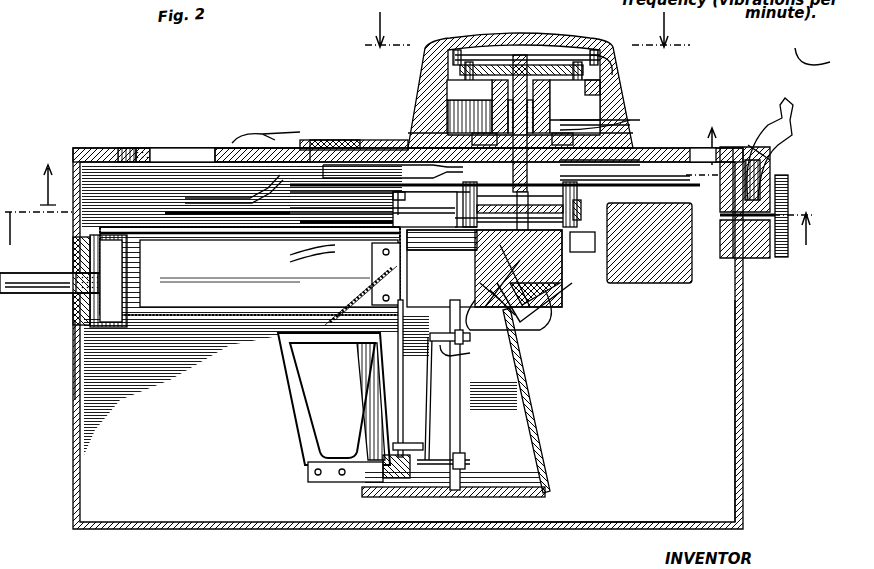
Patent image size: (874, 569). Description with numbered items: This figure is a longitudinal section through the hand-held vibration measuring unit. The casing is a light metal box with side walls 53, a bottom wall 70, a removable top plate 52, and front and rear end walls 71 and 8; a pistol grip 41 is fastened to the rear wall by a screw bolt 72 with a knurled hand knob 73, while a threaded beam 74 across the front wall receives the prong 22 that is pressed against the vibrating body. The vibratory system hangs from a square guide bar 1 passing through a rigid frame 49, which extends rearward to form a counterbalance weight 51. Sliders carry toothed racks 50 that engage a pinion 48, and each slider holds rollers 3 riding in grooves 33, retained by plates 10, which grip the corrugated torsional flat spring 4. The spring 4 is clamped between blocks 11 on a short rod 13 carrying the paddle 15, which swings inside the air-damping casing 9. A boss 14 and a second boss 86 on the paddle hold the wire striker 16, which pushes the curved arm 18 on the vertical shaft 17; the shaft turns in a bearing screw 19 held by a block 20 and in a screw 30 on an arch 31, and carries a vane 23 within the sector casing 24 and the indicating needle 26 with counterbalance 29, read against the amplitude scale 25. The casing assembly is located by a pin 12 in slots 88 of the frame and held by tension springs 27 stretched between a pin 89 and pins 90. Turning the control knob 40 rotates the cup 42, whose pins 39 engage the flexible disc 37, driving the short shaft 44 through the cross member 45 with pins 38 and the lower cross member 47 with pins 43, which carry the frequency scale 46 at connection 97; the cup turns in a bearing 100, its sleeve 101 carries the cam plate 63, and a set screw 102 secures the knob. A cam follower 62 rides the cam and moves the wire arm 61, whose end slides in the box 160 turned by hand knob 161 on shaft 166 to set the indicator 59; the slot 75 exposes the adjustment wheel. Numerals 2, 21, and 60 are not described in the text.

The bar 1 is at (540, 310).
The wedge face 2 is at (555, 300).
The rollers 3 is at (413, 228).
The flat spring 4 is at (363, 166).
The rear end wall 8 is at (740, 377).
The casing 9 is at (525, 382).
The plates 10 is at (520, 80).
The blocks 11 is at (460, 300).
The pin 12 is at (346, 340).
The short rod 13 is at (463, 335).
The boss 14 is at (465, 351).
The paddle 15 is at (460, 370).
The striker 16 is at (432, 416).
The vertical shaft 17 is at (403, 368).
The angular arm 18 is at (412, 443).
The bearing screw 19 is at (390, 497).
The block 20 is at (357, 412).
The casing wall 21 is at (76, 345).
The prong 22 is at (40, 280).
The vane 23 is at (230, 315).
The sector shape casing 24 is at (275, 312).
The amplitude scale 25 is at (125, 148).
The indicating needle 26 is at (143, 148).
The tension springs 27 is at (350, 280).
The counterbalance 29 is at (422, 238).
The screw 30 is at (380, 186).
The arch 31 is at (440, 192).
The groove 33 is at (566, 185).
The flexible disc 37 is at (523, 55).
The pins 38 is at (456, 52).
The pins 39 is at (492, 90).
The control knob 40 is at (565, 58).
The pistol grip 41 is at (792, 105).
The cup-shaped member 42 is at (460, 70).
The pins 43 is at (704, 146).
The short shaft 44 is at (598, 105).
The cross shaped member 45 is at (592, 55).
The frequency scale 46 is at (600, 175).
The member 47 is at (583, 241).
The pinion 48 is at (575, 285).
The rigid frame 49 is at (570, 292).
The toothed rack 50 is at (538, 355).
The counterbalance weight 51 is at (678, 283).
The top plate 52 is at (88, 148).
The side walls 53 is at (568, 184).
The indicator 59 is at (215, 162).
The plate 60 is at (390, 150).
The wire arm 61 is at (316, 140).
The cam follower 62 is at (455, 145).
The cam plate 63 is at (620, 132).
The bottom wall 70 is at (588, 520).
The front end wall 71 is at (78, 430).
The screw bolt 72 is at (760, 258).
The knurled hand knob 73 is at (782, 175).
The beam 74 is at (73, 320).
The slot 75 is at (722, 145).
The boss 86 is at (445, 456).
The slots 88 is at (360, 398).
The pin 89 is at (335, 312).
The pin 90 is at (335, 253).
The frequency scale connection 97 is at (630, 148).
The bearing 100 is at (470, 118).
The sleeve 101 is at (630, 110).
The set screw 102 is at (630, 68).
The box 160 is at (235, 185).
The hand knob 161 is at (300, 132).
The shaft 166 is at (290, 160).